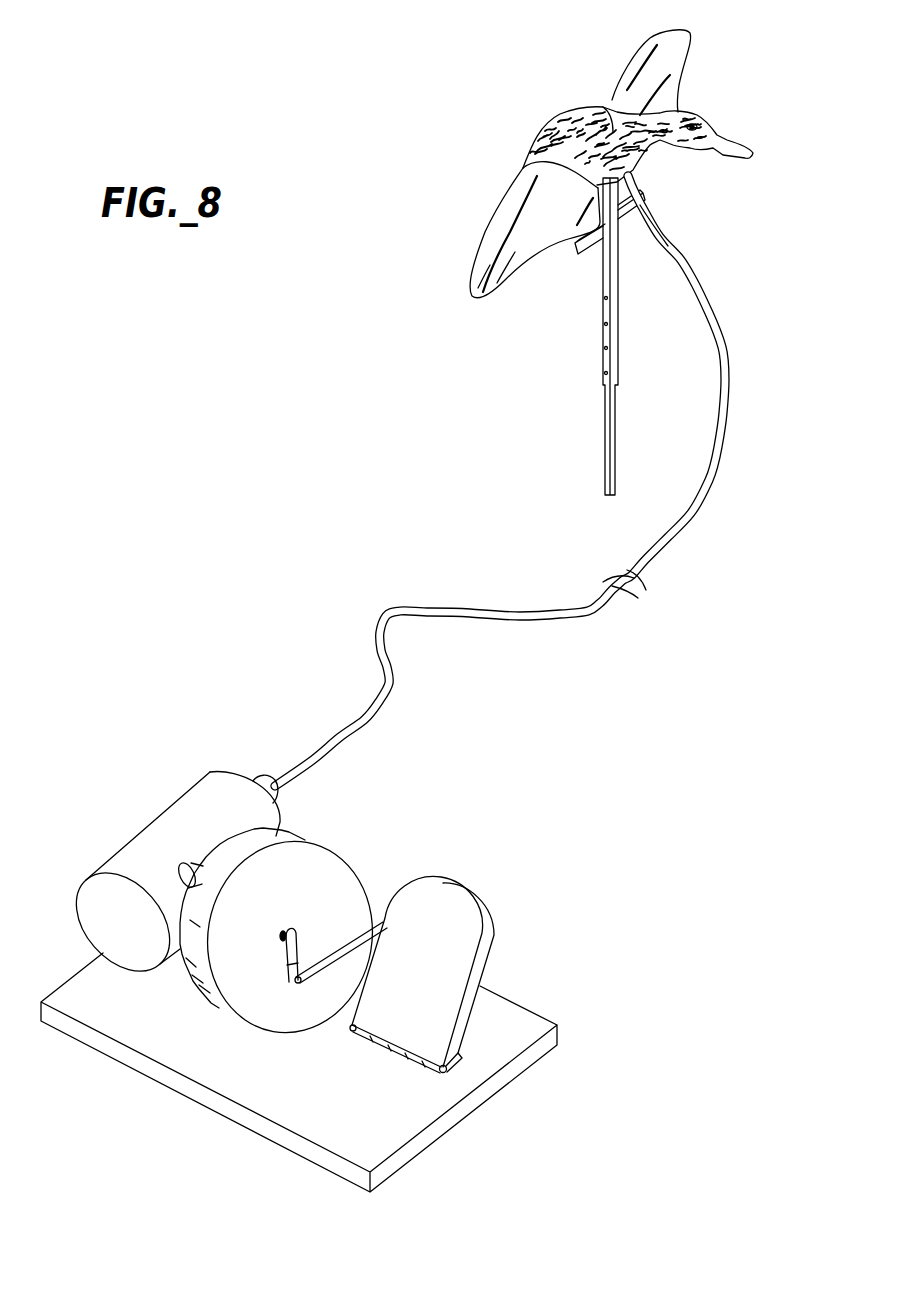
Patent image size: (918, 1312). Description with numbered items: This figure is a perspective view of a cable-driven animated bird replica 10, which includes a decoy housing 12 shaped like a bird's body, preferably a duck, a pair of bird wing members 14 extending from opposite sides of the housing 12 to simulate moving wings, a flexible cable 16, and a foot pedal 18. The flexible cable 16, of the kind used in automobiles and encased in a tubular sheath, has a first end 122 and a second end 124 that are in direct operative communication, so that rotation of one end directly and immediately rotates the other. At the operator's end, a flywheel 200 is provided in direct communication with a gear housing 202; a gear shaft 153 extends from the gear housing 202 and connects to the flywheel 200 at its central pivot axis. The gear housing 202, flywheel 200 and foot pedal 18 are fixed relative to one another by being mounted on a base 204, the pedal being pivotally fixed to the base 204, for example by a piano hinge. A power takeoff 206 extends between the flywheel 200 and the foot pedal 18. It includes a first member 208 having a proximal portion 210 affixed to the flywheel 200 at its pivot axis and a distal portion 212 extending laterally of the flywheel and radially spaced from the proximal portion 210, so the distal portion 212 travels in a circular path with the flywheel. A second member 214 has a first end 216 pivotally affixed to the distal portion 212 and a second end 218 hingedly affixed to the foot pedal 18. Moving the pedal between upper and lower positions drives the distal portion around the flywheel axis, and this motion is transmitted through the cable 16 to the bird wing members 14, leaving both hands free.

The cable-driven animated bird replica 10 is at (382, 437).
The decoy housing 12 is at (550, 128).
The bird wing members 14 is at (680, 95).
The flexible cable 16 is at (716, 370).
The foot pedal 18 is at (490, 912).
The first end 122 is at (655, 222).
The second end 124 is at (305, 770).
The gear shaft 153 is at (193, 860).
The flywheel 200 is at (352, 851).
The gear housing 202 is at (173, 793).
The base 204 is at (373, 1153).
The power takeoff 206 is at (336, 915).
The first member 208 is at (285, 947).
The proximal portion 210 is at (285, 927).
The distal portion 212 is at (287, 973).
The second member 214 is at (343, 958).
The first end 216 is at (297, 985).
The second end 218 is at (382, 910).